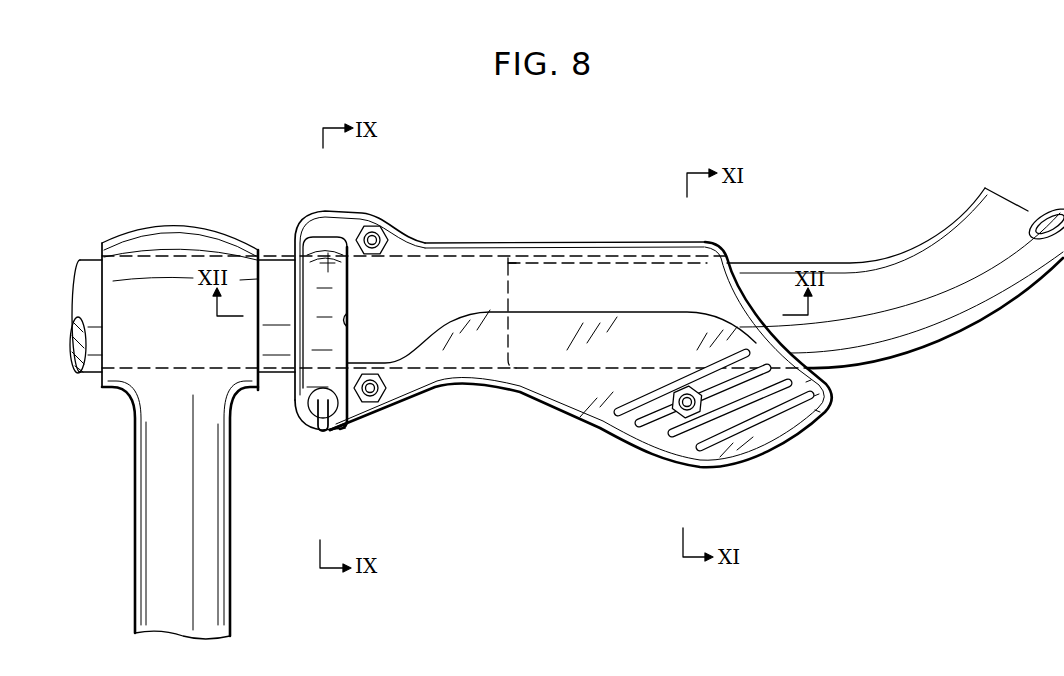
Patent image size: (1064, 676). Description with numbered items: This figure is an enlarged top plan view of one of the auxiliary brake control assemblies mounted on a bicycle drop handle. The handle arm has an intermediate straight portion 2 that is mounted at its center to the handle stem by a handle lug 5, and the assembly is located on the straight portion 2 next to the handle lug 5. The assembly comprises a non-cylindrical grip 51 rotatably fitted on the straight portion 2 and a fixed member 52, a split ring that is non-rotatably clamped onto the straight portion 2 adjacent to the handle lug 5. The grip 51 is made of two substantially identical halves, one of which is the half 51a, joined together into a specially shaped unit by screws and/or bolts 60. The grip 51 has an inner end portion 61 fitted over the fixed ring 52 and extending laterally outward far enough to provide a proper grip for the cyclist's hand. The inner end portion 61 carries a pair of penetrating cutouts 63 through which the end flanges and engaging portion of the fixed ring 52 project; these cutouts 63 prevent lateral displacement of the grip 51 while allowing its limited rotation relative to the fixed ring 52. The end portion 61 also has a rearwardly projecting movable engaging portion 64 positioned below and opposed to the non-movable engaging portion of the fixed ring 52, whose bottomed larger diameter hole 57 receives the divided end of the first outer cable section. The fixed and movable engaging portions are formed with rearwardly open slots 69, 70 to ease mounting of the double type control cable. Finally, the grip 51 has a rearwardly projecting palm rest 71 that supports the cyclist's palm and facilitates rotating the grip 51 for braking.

The intermediate straight portion 2 is at (268, 254).
The handle lug 5 is at (148, 467).
The non-cylindrical grip 51 is at (549, 240).
The grip half 51a is at (432, 277).
The fixed member 52 is at (328, 263).
The bottomed larger diameter hole 57 is at (343, 430).
The screws and/or bolts 60 is at (385, 226).
The inner end portion 61 is at (320, 227).
The penetrating cutouts 63 is at (348, 330).
The movable engaging portion 64 is at (304, 414).
The rearwardly open slot 69 is at (323, 432).
The rearwardly open slot 70 is at (300, 469).
The palm rest 71 is at (742, 417).